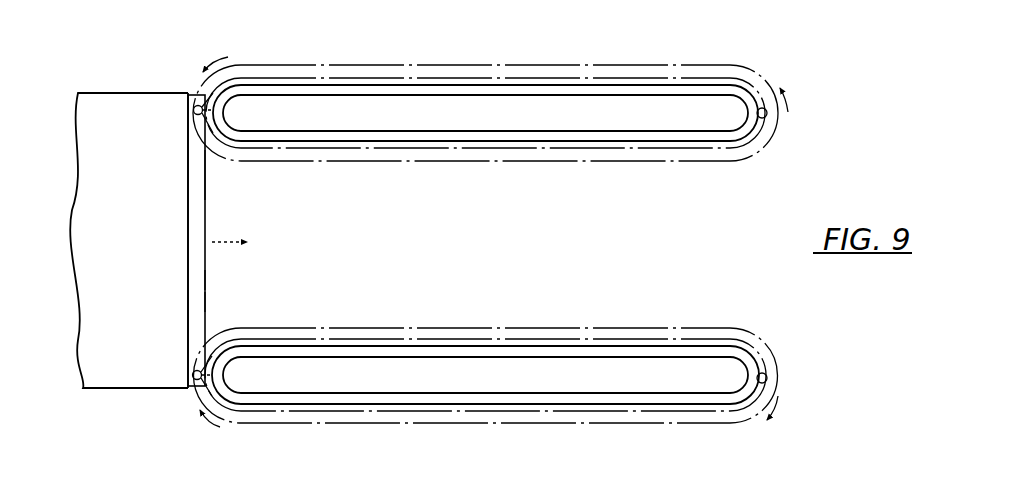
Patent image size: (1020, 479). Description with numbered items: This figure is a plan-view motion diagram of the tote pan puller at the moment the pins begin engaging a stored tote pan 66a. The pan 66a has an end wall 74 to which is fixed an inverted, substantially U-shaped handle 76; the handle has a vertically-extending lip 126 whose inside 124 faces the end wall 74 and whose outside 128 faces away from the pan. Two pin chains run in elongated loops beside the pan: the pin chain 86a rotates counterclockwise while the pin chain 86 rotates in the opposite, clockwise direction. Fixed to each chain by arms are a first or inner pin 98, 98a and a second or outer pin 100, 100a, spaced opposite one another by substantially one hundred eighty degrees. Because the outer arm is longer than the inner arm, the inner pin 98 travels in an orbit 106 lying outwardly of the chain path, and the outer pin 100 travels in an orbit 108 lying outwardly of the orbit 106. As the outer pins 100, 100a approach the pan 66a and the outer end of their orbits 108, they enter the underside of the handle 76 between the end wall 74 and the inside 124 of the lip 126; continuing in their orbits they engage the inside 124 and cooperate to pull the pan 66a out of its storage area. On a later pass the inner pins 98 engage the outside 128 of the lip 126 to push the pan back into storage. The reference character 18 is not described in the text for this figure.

The frame 18 is at (70, 324).
The tote pan 66a is at (143, 177).
The end wall 74 is at (189, 210).
The handle 76 is at (207, 182).
The chain 86 is at (445, 346).
The pin chain 86a is at (482, 84).
The first or inner pin 98 is at (767, 377).
The first or inner pin 98a is at (767, 117).
The second or outer pin 100 is at (193, 378).
The second or outer pin 100a is at (194, 106).
The orbit 106 is at (377, 77).
The orbit 108 is at (328, 64).
The inside of lip 124 is at (203, 258).
The lip 126 is at (205, 282).
The outside of lip 128 is at (205, 302).